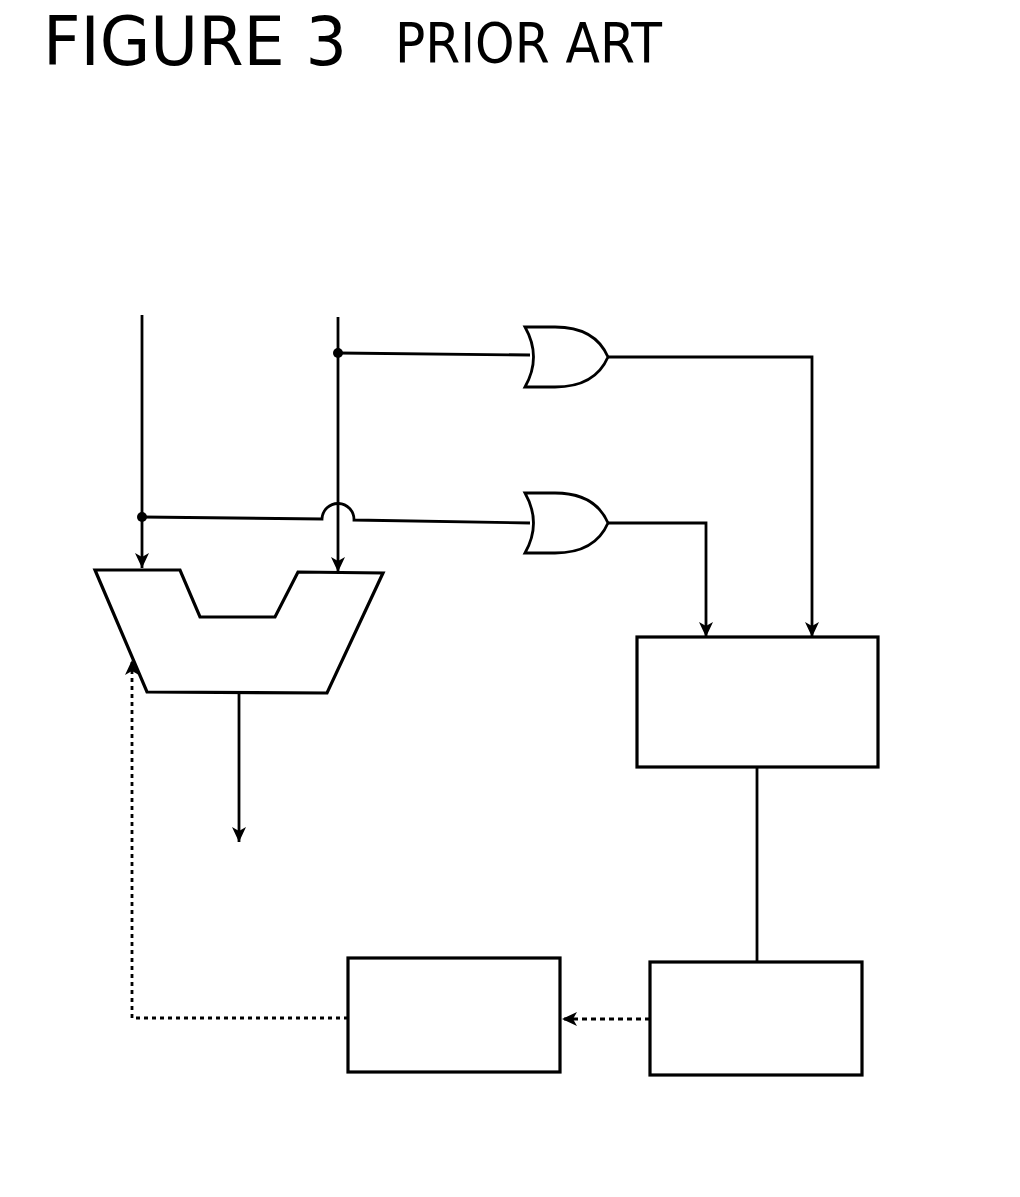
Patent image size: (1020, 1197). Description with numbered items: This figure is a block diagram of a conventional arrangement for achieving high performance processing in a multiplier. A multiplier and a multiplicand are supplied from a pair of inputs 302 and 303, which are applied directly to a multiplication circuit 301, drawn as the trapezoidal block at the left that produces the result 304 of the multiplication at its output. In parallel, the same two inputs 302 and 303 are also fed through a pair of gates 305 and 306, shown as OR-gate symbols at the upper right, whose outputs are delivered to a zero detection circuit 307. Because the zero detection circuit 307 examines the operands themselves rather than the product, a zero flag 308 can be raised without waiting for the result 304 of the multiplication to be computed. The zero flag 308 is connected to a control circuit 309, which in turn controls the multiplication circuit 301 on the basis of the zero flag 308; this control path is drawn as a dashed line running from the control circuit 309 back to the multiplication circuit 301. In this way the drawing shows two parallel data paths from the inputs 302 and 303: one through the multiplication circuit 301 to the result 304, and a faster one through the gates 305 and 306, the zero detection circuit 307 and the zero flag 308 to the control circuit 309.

The multiplication circuit 301 is at (353, 642).
The input 302 is at (143, 322).
The input 303 is at (338, 325).
The result 304 is at (239, 760).
The gate 305 is at (565, 493).
The gate 306 is at (567, 327).
The zero detection circuit 307 is at (690, 767).
The zero flag 308 is at (760, 1075).
The control circuit 309 is at (453, 1072).